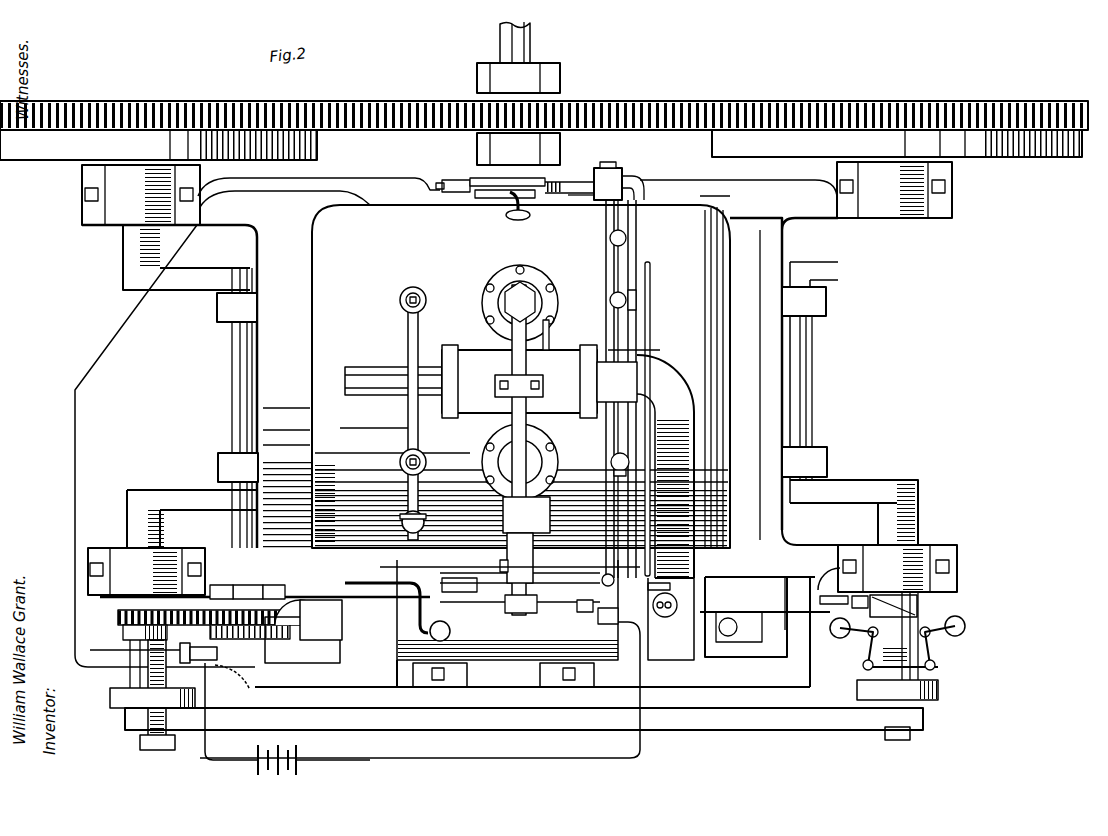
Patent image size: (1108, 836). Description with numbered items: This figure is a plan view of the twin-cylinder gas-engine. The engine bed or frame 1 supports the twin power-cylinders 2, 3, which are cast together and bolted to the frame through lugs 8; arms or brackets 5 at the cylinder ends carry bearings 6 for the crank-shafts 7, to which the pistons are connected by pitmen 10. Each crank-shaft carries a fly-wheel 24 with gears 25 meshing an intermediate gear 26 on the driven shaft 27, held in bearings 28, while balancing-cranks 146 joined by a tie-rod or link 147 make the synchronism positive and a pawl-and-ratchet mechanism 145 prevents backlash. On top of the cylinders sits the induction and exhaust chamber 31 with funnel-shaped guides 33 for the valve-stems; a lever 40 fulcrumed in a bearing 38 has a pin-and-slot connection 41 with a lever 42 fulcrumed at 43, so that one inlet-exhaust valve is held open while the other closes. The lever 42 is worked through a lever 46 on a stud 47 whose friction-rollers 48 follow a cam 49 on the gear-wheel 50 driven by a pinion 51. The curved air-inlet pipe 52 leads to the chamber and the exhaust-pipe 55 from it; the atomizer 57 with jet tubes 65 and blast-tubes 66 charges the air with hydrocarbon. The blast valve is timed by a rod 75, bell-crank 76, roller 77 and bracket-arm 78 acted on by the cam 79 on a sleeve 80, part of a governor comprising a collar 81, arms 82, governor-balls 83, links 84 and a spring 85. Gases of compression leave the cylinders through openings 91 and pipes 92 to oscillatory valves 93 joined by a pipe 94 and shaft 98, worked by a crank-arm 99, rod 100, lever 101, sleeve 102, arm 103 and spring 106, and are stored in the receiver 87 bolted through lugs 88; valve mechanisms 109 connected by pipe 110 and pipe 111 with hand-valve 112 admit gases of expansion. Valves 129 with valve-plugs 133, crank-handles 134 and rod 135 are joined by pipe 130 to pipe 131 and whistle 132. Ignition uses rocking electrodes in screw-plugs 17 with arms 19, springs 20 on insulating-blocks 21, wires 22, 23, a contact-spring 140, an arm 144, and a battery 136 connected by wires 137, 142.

The engine bed or frame 1 is at (532, 673).
The power-cylinder 2 is at (770, 445).
The power-cylinder 3 is at (460, 376).
The arms or brackets 5 is at (522, 372).
The bearings 6 is at (519, 378).
The crank-shafts 7 is at (232, 372).
The lugs 8 is at (540, 632).
The pitmen 10 is at (217, 308).
The screw-plug 17 is at (508, 200).
The arm 19 is at (507, 380).
The spring 20 is at (448, 180).
The insulating-block 21 is at (504, 605).
The wire 22 is at (384, 673).
The wire 23 is at (163, 446).
The fly-wheel 24 is at (541, 145).
The gears 25 is at (160, 104).
The intermediate gear 26 is at (636, 102).
The shaft 27 is at (526, 48).
The bearings 28 is at (518, 114).
The induction and exhaust chamber 31 is at (539, 381).
The funnel-shaped guide 33 is at (545, 302).
The bearing 38 is at (530, 378).
The lever 40 is at (549, 340).
The pin-and-slot connection 41 is at (500, 462).
The lever 42 is at (555, 485).
The fulcrum 43 is at (548, 503).
The lever 46 is at (386, 604).
The stud or support 47 is at (318, 590).
The friction-roller 48 is at (245, 585).
The cam 49 is at (218, 585).
The gear-wheel 50 is at (272, 585).
The pinion 51 is at (115, 622).
The air-inlet pipe 52 is at (665, 466).
The exhaust-pipe 55 is at (393, 381).
The atomizer 57 is at (671, 619).
The jet or spray tubes 65 is at (662, 579).
The blast-tubes 66 is at (666, 604).
The rod 75 is at (780, 610).
The bell-crank 76 is at (839, 590).
The roller 77 is at (869, 590).
The stud or bracket-arm 78 is at (823, 569).
The cam 79 is at (917, 600).
The sleeve 80 is at (917, 610).
The collar 81 is at (940, 668).
The arms 82 is at (906, 648).
The governor-balls 83 is at (897, 636).
The links 84 is at (907, 622).
The spring 85 is at (880, 665).
The receiver 87 is at (510, 610).
The lugs 88 is at (503, 675).
The openings 91 is at (607, 580).
The pipes 92 is at (576, 194).
The oscillatory valves 93 is at (600, 168).
The pipe 94 is at (637, 243).
The rod or shaft 98 is at (606, 232).
The crank-arm 99 is at (505, 683).
The rod, link or bar 100 is at (570, 618).
The lever 101 is at (460, 629).
The sleeve 102 is at (342, 625).
The arm 103 is at (300, 650).
The spring 106 is at (250, 629).
The valve mechanism 109 is at (415, 293).
The pipe 110 is at (420, 343).
The pipe 111 is at (408, 493).
The hand-valve 112 is at (420, 515).
The valve 129 is at (651, 285).
The pipe 130 is at (652, 349).
The pipe 131 is at (620, 225).
The whistle 132 is at (626, 235).
The oscillatory valve-plug 133 is at (628, 455).
The crank-handle 134 is at (626, 470).
The reciprocating rod or lever 135 is at (650, 338).
The battery 136 is at (298, 755).
The wire 137 is at (330, 753).
The contact-spring 140 is at (140, 650).
The wire 142 is at (231, 712).
The arm 144 is at (240, 655).
The pawl-and-ratchet mechanism 145 is at (145, 580).
The cranks 146 is at (110, 698).
The tie-rod or link 147 is at (524, 719).